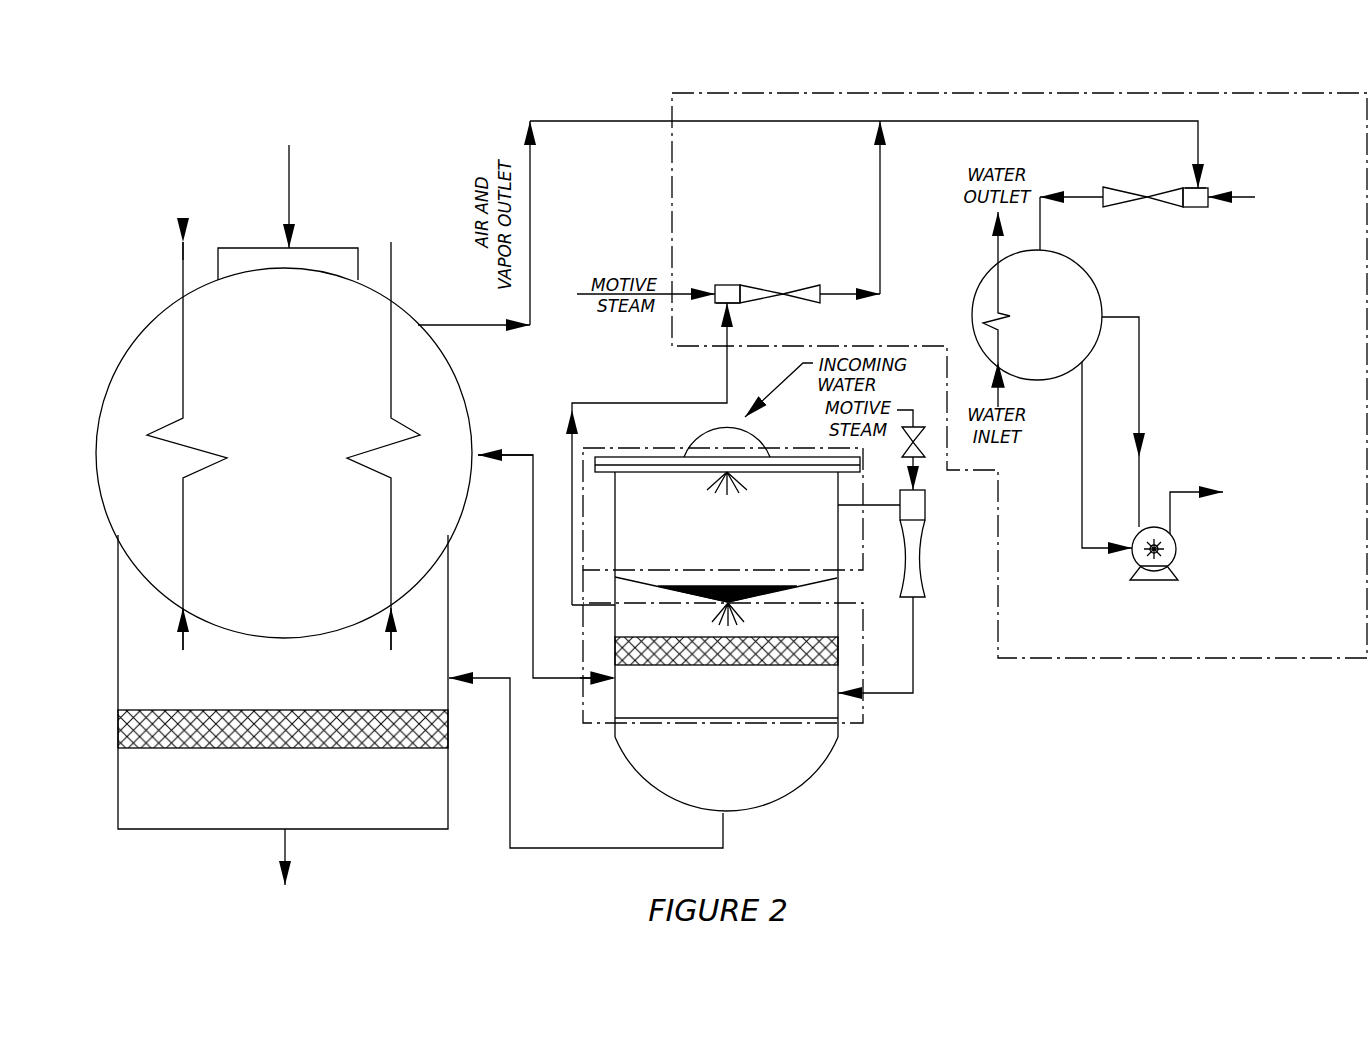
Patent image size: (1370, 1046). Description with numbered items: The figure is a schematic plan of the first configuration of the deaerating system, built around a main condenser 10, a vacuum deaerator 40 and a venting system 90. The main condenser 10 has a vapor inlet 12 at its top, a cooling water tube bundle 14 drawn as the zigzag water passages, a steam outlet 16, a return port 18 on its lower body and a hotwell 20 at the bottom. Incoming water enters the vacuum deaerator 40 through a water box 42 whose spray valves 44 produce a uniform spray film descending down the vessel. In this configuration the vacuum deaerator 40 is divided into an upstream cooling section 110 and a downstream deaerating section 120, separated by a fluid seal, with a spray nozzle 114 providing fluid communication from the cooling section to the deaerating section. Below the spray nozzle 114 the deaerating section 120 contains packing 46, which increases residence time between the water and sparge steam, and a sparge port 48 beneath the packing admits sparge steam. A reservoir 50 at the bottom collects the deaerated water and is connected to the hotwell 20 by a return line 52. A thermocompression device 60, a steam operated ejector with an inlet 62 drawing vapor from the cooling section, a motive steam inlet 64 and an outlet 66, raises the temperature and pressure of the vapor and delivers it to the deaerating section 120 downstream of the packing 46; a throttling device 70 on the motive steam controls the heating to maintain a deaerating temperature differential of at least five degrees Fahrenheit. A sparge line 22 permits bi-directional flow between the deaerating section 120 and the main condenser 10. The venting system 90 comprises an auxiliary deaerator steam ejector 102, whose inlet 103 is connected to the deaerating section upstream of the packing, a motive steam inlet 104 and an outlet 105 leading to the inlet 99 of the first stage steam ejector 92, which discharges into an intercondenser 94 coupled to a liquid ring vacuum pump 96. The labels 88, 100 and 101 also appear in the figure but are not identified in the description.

The main condenser 10 is at (150, 325).
The vapor inlet 12 is at (291, 246).
The cooling water tube bundle 14 is at (148, 434).
The steam outlet 16 is at (476, 453).
The return port 18 is at (449, 683).
The hotwell 20 is at (178, 766).
The sparge line 22 is at (532, 560).
The vacuum deaerator 40 is at (848, 752).
The water box 42 is at (688, 441).
The spray valves 44 is at (733, 475).
The packing 46 is at (838, 655).
The sparge port 48 is at (613, 683).
The reservoir 50 is at (797, 793).
The return line 52 is at (607, 850).
The thermocompression device 60 is at (915, 557).
The inlet 62 is at (900, 508).
The motive steam inlet 64 is at (910, 487).
The outlet 66 is at (915, 603).
The throttling device 70 is at (923, 458).
The boundary 88 is at (937, 92).
The venting system 90 is at (1028, 112).
The first stage steam ejector 92 is at (1168, 207).
The intercondenser 94 is at (1093, 280).
The liquid ring vacuum pump 96 is at (1175, 557).
The inlet 99 is at (1193, 180).
The ejector 100 is at (1213, 187).
The ejector outlet 101 is at (1105, 188).
The auxiliary deaerator steam ejector 102 is at (733, 285).
The inlet 103 is at (732, 303).
The motive steam inlet 104 is at (713, 297).
The outlet 105 is at (822, 303).
The cooling section 110 is at (850, 572).
The spray nozzle 114 is at (733, 607).
The deaerating section 120 is at (862, 708).